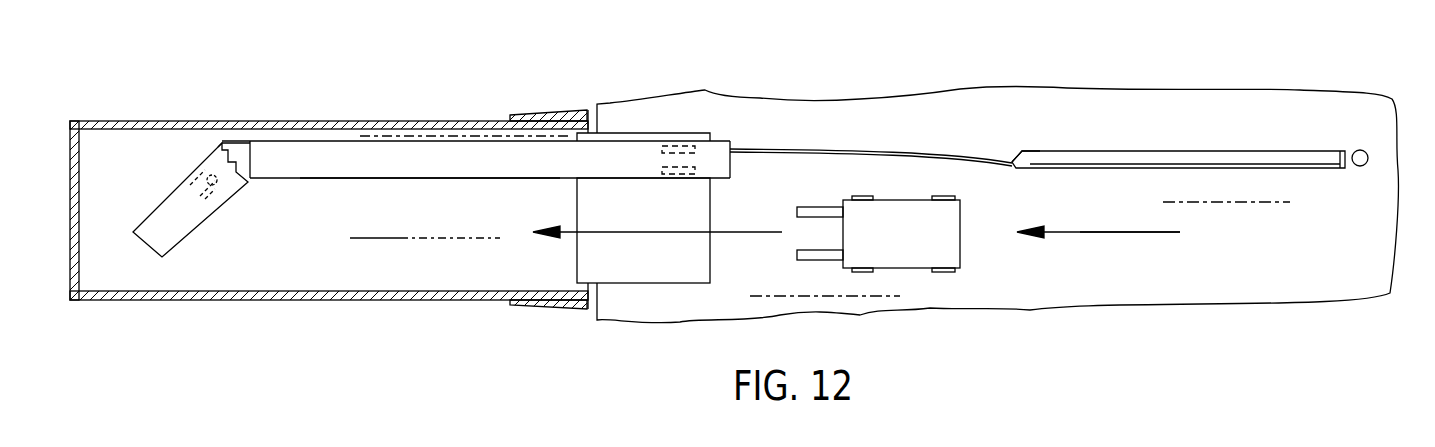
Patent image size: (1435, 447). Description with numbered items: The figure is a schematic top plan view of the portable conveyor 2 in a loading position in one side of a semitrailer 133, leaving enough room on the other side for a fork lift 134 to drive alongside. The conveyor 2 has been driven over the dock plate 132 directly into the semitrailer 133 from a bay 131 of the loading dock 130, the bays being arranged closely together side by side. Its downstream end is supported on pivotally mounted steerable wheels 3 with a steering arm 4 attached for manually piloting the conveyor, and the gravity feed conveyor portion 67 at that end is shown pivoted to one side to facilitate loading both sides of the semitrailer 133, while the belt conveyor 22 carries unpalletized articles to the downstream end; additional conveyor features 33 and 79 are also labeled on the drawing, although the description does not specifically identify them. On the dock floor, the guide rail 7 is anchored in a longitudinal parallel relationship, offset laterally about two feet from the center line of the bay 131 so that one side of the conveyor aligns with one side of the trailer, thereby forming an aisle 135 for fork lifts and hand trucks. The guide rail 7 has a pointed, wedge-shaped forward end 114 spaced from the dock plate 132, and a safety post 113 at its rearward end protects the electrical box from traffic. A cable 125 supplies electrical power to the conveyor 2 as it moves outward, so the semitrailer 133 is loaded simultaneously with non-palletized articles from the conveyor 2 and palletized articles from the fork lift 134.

The portable conveyor 2 is at (390, 141).
The steerable wheels 3 is at (223, 195).
The steering arm 4 is at (185, 238).
The guide rail 7 is at (1127, 155).
The belt conveyor 22 is at (418, 174).
The fastening openings 33 is at (670, 176).
The gravity feed conveyor portion 67 is at (167, 205).
The stepped coupling 79 is at (232, 148).
The safety post 113 is at (1351, 151).
The forward end 114 is at (1010, 158).
The cable 125 is at (846, 148).
The loading dock 130 is at (1217, 92).
The bay 131 is at (1363, 260).
The dock plate 132 is at (670, 275).
The semitrailer 133 is at (138, 122).
The fork lift 134 is at (902, 255).
The aisle 135 is at (1112, 257).